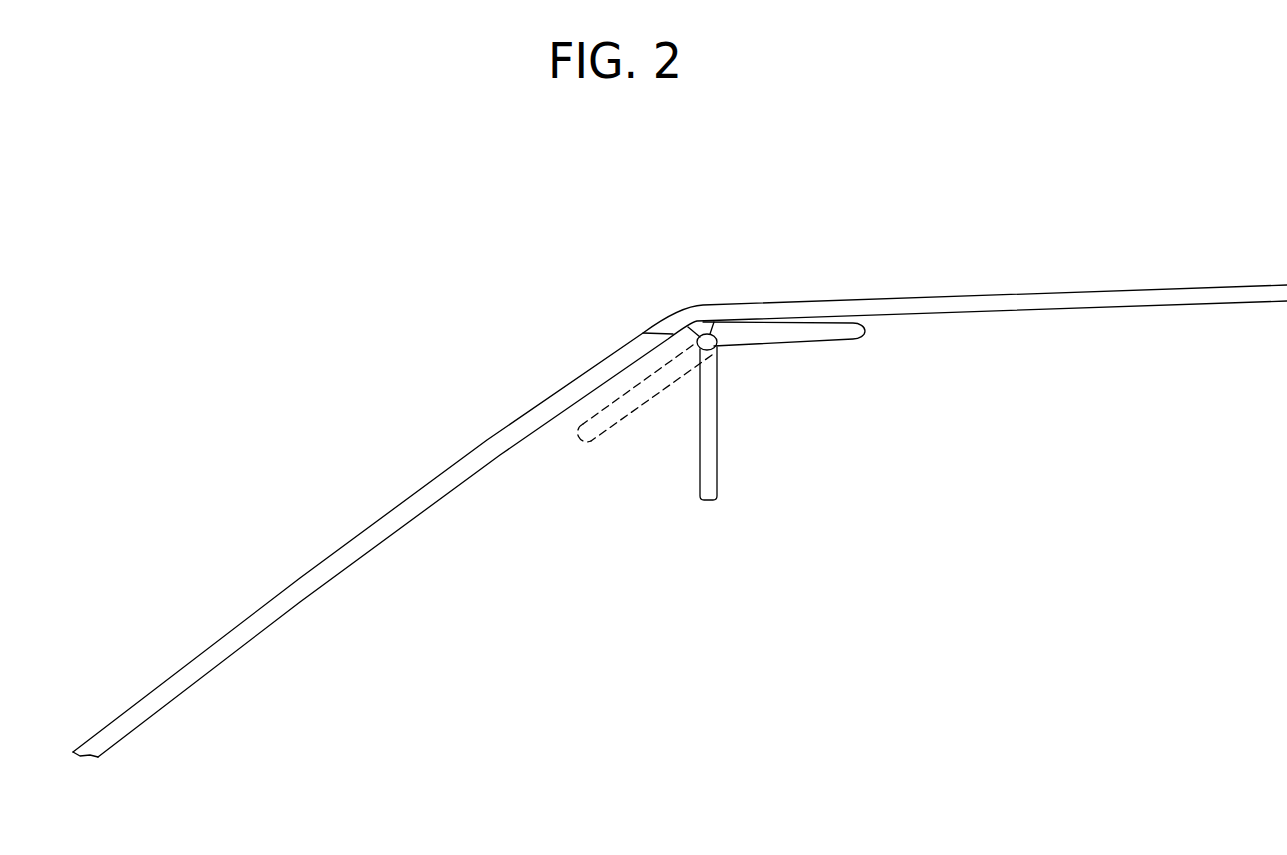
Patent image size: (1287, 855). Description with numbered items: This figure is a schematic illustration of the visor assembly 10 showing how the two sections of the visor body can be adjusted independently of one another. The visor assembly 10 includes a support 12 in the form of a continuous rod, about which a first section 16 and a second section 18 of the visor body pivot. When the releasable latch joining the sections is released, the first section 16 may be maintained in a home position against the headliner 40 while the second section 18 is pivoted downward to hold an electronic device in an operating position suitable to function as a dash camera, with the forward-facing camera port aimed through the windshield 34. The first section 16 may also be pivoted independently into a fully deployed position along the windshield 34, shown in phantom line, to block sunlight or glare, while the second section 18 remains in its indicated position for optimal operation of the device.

The visor assembly 10 is at (583, 553).
The support 12 is at (712, 333).
The first section 16 is at (616, 402).
The second section 18 is at (708, 502).
The windshield 34 is at (360, 537).
The headliner 40 is at (790, 316).